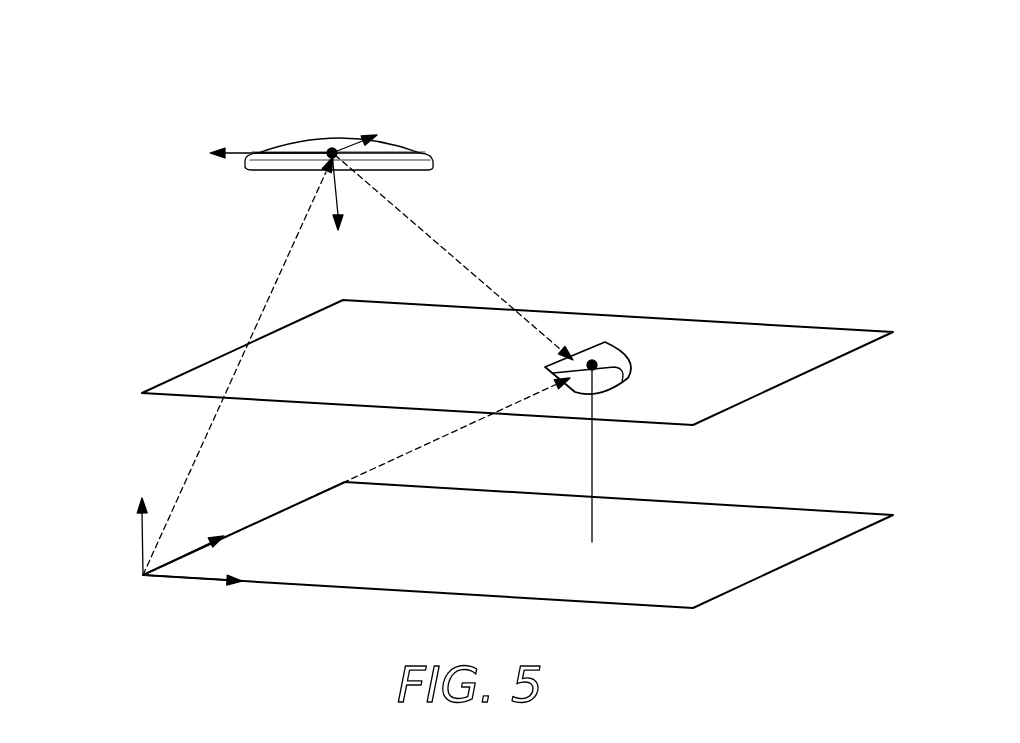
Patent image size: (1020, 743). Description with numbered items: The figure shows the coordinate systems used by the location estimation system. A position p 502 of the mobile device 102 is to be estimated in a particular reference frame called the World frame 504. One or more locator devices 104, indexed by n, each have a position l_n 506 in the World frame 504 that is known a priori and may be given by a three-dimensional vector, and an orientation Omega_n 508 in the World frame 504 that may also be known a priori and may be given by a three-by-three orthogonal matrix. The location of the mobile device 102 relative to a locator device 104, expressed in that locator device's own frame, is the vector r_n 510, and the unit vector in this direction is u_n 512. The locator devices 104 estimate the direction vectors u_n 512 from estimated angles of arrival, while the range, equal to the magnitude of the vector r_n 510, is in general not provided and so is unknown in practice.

The mobile device 102 is at (615, 382).
The locator device 104 is at (265, 169).
The position p of the mobile device 502 is at (405, 453).
The World frame 504 is at (120, 605).
The position l_n of the locator device 506 is at (227, 288).
The orientation Omega_n of the locator device 508 is at (350, 96).
The vector r_n 510 is at (547, 268).
The unit vector u_n 512 is at (443, 190).